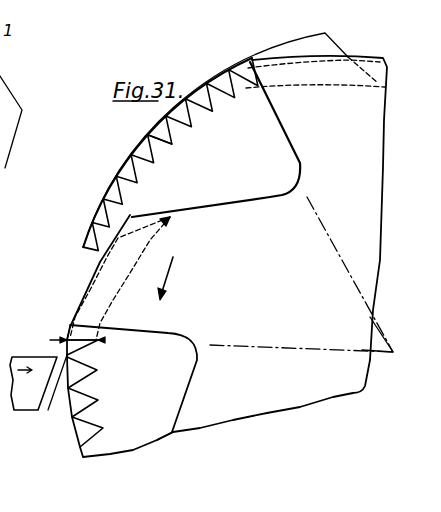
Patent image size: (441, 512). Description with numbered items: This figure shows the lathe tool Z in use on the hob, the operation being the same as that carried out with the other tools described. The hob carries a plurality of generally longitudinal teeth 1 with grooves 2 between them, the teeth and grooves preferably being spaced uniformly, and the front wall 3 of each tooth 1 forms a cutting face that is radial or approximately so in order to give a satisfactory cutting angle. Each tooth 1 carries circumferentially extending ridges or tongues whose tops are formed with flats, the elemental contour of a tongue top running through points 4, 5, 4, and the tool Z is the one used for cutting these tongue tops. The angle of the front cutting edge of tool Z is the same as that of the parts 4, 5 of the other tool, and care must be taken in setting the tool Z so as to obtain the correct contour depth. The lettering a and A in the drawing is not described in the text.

The tooth 1 is at (328, 94).
The groove 2 is at (192, 153).
The front wall 3 is at (270, 118).
The contour point 4 is at (72, 327).
The contour point 5 is at (73, 325).
The tooth pitch a is at (77, 341).
The segment A is at (227, 245).
The tool Z is at (38, 382).